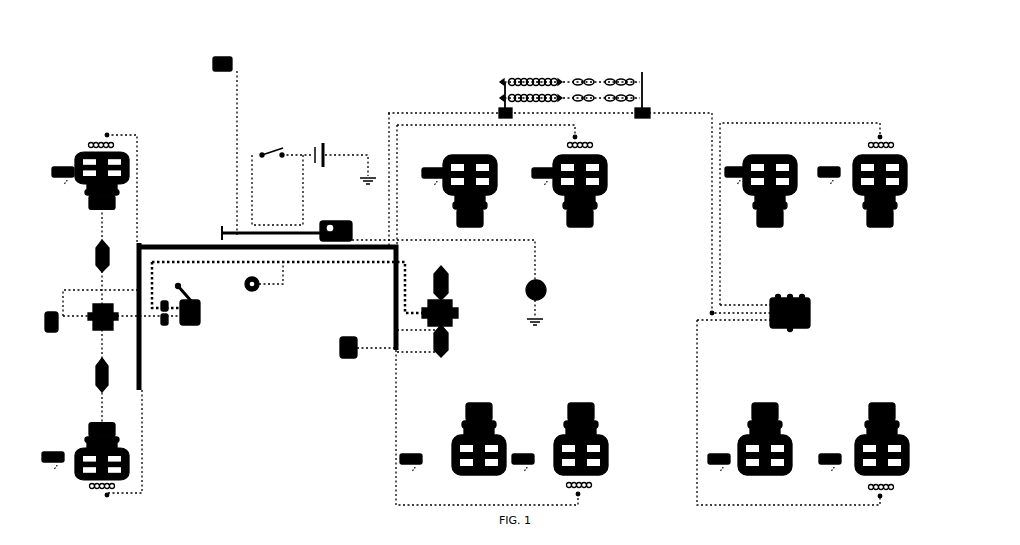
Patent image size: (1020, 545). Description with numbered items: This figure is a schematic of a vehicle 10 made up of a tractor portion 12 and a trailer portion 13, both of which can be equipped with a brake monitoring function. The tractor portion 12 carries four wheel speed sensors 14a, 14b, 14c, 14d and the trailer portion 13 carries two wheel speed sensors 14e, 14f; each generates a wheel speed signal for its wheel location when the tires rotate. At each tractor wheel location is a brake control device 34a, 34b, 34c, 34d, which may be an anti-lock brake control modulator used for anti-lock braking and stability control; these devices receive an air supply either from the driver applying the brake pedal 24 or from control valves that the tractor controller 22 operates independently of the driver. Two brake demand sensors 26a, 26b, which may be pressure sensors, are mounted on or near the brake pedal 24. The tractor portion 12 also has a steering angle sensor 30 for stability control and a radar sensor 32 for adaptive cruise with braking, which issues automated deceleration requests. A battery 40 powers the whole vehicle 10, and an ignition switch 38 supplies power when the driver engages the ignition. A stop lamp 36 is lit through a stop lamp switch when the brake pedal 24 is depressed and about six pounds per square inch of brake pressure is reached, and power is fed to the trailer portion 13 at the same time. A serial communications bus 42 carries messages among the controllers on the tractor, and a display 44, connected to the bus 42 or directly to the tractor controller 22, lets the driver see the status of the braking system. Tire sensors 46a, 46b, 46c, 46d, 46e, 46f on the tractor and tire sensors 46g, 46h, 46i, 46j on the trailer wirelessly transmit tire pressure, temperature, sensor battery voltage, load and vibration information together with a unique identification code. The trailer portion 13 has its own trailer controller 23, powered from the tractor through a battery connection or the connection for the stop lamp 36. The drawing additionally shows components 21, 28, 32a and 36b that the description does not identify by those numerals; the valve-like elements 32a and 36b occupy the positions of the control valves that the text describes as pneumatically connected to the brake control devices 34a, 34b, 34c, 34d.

The vehicle 10 is at (593, 53).
The tractor portion 12 is at (303, 94).
The trailer portion 13 is at (822, 111).
The wheel speed sensor 14a is at (107, 135).
The wheel speed sensor 14b is at (107, 495).
The wheel speed sensor 14c is at (576, 137).
The wheel speed sensor 14d is at (580, 494).
The wheel speed sensor 14e is at (882, 137).
The wheel speed sensor 14f is at (882, 497).
The indicator 21 is at (331, 224).
The tractor controller 22 is at (340, 221).
The trailer controller 23 is at (798, 299).
The brake pedal 24 is at (191, 298).
The brake demand sensor 26a is at (165, 301).
The brake demand sensor 26b is at (166, 326).
The pressure sensor 28 is at (352, 338).
The steering angle sensor 30 is at (253, 277).
The radar sensor 32 is at (51, 313).
The relay valve 32a is at (112, 308).
The brake control device 34a is at (108, 257).
The brake control device 34b is at (107, 371).
The brake control device 34c is at (446, 286).
The brake control device 34d is at (448, 345).
The stop lamp 36 is at (541, 283).
The relay valve 36b is at (449, 310).
The ignition switch 38 is at (268, 152).
The battery 40 is at (323, 145).
The serial communications bus 42 is at (224, 229).
The display 44 is at (222, 57).
The tire sensor 46a is at (62, 167).
The tire sensor 46b is at (53, 452).
The tire sensor 46c is at (434, 168).
The tire sensor 46d is at (412, 453).
The tire sensor 46e is at (544, 168).
The tire sensor 46f is at (526, 453).
The tire sensor 46g is at (736, 167).
The tire sensor 46h is at (721, 453).
The tire sensor 46i is at (831, 167).
The tire sensor 46j is at (831, 453).